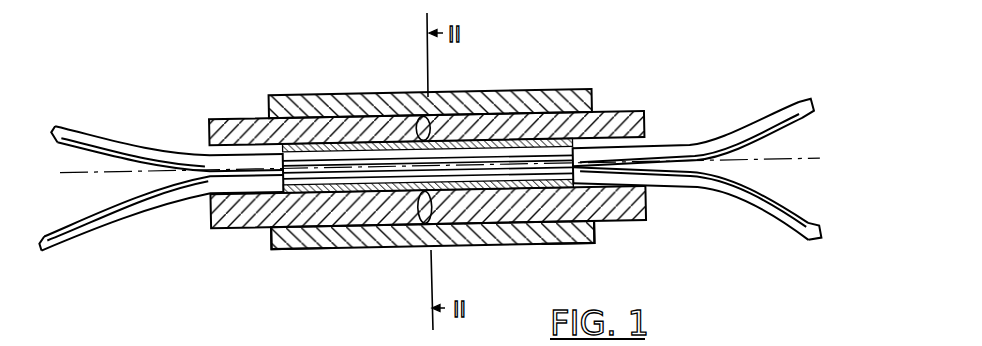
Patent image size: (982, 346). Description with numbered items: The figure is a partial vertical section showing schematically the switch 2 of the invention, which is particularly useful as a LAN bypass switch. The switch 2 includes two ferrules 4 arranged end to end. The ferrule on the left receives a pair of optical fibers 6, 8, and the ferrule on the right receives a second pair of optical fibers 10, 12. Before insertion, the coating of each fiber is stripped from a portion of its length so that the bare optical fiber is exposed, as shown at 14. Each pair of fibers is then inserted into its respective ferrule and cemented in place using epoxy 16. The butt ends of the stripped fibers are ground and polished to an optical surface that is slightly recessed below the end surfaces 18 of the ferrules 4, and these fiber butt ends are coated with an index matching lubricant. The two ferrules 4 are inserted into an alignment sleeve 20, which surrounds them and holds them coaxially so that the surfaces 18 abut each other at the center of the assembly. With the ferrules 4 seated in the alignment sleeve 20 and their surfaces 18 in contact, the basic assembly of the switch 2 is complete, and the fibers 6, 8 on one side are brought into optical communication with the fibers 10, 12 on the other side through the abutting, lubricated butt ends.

The switch 2 is at (440, 159).
The ferrules 4 is at (234, 117).
The optical fiber 6 is at (145, 153).
The optical fiber 8 is at (150, 203).
The optical fiber 10 is at (745, 122).
The optical fiber 12 is at (714, 190).
The bare optical fiber 14 is at (362, 249).
The epoxy 16 is at (326, 250).
The surfaces of the ferrules 18 is at (418, 130).
The alignment sleeve 20 is at (557, 92).